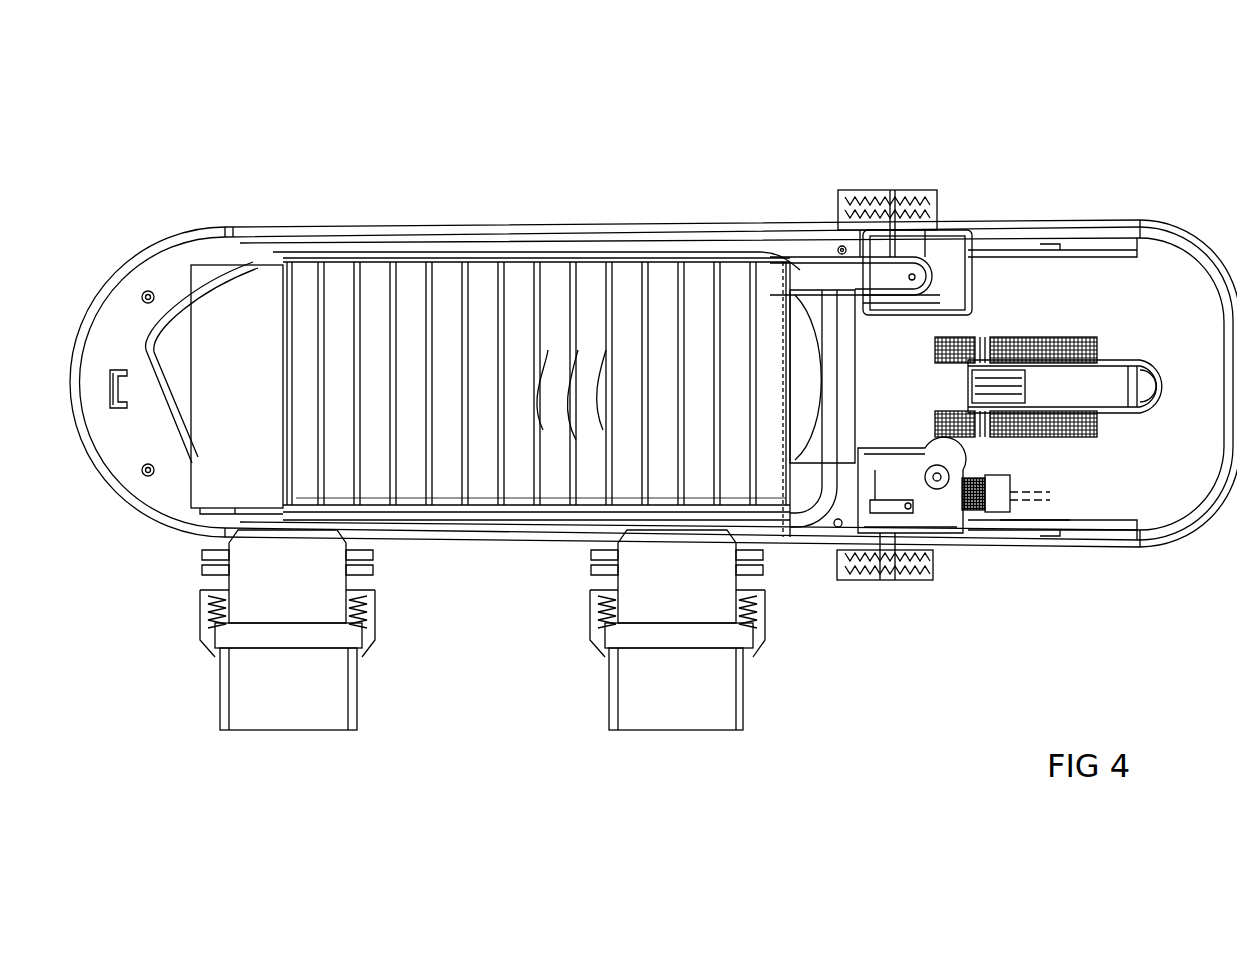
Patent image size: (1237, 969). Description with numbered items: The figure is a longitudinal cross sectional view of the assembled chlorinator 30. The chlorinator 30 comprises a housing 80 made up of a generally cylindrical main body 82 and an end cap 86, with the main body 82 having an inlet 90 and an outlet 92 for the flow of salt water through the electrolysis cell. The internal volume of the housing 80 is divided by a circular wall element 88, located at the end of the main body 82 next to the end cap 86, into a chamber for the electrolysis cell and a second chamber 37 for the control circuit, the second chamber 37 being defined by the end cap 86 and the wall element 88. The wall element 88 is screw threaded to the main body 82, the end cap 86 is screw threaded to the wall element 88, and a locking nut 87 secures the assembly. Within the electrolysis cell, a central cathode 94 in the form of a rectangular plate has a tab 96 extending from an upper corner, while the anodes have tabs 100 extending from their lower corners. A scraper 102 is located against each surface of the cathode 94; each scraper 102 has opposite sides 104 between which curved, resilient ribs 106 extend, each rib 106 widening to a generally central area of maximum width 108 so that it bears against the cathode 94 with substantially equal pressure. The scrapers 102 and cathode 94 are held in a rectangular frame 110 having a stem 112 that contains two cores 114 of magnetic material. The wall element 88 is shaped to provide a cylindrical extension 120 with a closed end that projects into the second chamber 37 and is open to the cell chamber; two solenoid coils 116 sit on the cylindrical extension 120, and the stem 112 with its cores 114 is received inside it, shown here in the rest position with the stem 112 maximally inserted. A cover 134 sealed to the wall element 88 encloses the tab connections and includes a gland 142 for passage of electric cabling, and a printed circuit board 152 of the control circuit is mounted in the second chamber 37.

The chlorinator 30 is at (302, 166).
The housing 80 is at (286, 216).
The main body 82 is at (224, 222).
The cathode 94 is at (212, 292).
The scraper 102 is at (446, 250).
The sides 104 is at (531, 268).
The ribs 106 is at (578, 300).
The frame 110 is at (650, 252).
The central area of maximum width 108 is at (603, 425).
The wall element 88 is at (838, 282).
The tab 96 is at (834, 232).
The cover 134 is at (940, 260).
The second chamber 37 is at (1013, 263).
The end cap 86 is at (1098, 224).
The stem 112 is at (1118, 372).
The cores 114 is at (1065, 383).
The solenoid coils 116 is at (1050, 432).
The cylindrical extension 120 is at (1160, 410).
The tabs 100 is at (806, 478).
The locking nut 87 is at (905, 575).
The gland 142 is at (1010, 505).
The printed circuit board 152 is at (1152, 495).
The inlet 90 is at (240, 700).
The outlet 92 is at (725, 700).